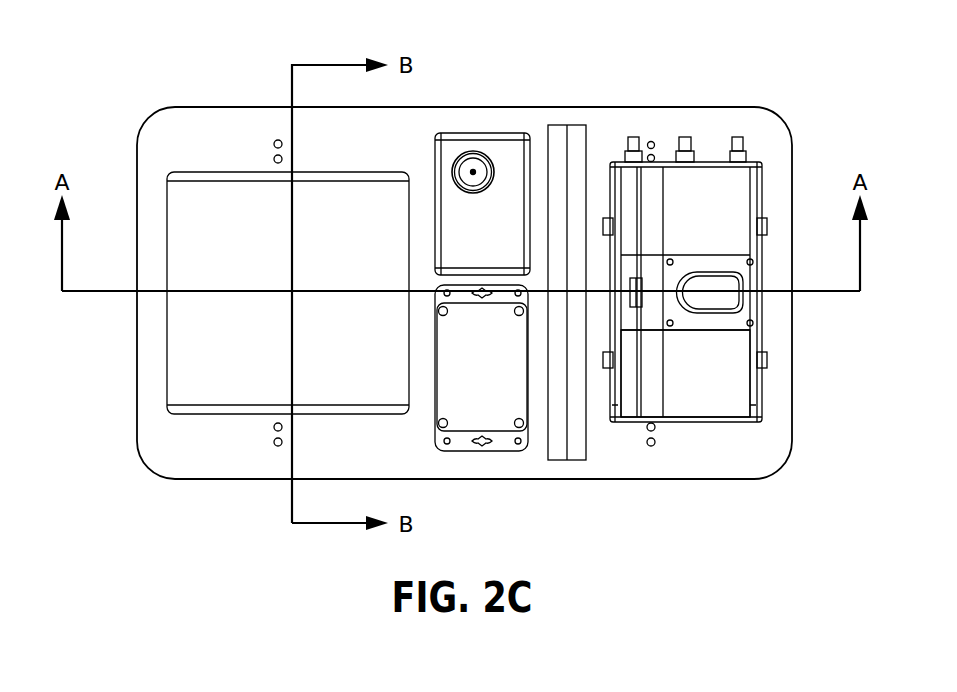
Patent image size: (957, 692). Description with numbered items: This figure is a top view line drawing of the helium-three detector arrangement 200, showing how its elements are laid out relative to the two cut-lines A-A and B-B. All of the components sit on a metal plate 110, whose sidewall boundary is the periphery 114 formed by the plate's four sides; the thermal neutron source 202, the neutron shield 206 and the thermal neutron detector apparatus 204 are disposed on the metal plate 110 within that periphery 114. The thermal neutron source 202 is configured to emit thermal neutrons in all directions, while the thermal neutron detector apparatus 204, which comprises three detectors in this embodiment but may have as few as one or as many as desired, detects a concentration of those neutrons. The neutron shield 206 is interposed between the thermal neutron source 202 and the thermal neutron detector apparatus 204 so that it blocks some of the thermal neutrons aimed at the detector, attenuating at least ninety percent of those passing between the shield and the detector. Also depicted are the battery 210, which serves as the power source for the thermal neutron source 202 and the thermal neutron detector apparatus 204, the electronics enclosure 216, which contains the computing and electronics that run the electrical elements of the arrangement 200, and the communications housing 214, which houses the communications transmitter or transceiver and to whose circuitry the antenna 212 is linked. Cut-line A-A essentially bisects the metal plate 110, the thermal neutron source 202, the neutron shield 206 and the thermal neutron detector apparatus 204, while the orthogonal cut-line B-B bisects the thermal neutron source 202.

The He-3 detector arrangement 200 is at (469, 269).
The periphery 114 is at (248, 107).
The metal plate 110 is at (464, 293).
The thermal neutron source 202 is at (288, 293).
The communications housing 214 is at (504, 174).
The antenna 212 is at (473, 153).
The electronics enclosure 216 is at (481, 368).
The neutron shield 206 is at (577, 127).
The thermal neutron detector apparatus 204 is at (685, 135).
The battery 210 is at (698, 417).